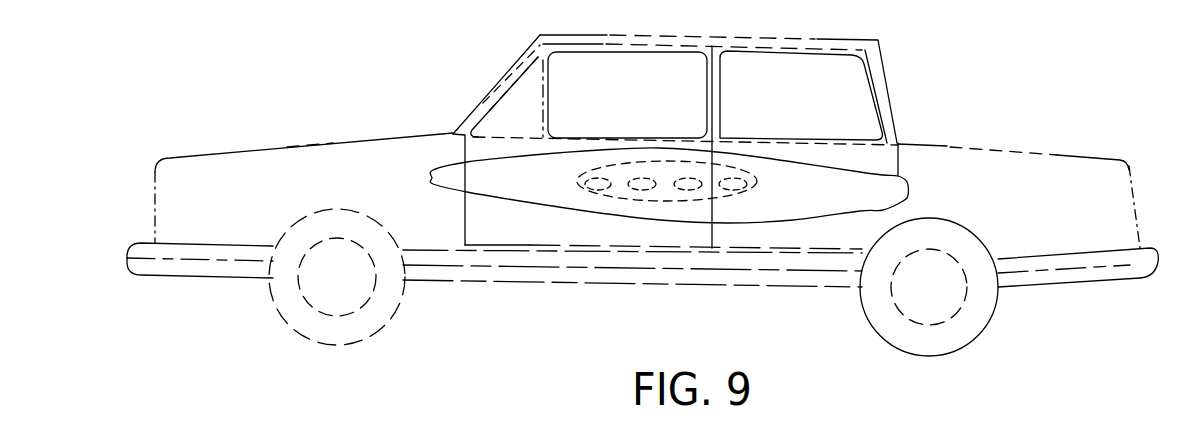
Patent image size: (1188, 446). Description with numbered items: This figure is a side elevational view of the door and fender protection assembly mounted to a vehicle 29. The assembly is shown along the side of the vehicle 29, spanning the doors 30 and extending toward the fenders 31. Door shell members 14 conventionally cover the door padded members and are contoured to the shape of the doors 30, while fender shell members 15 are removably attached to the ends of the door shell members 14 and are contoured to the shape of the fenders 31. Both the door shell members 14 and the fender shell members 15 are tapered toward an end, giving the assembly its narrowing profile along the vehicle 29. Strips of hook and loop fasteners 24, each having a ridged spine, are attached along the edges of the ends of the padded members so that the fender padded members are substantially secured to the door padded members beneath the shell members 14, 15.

The door shell member 14 is at (582, 202).
The fender shell member 15 is at (450, 182).
The strip of hook and loop fasteners 24 is at (477, 198).
The vehicle 29 is at (215, 177).
The door 30 is at (497, 152).
The fender 31 is at (327, 163).